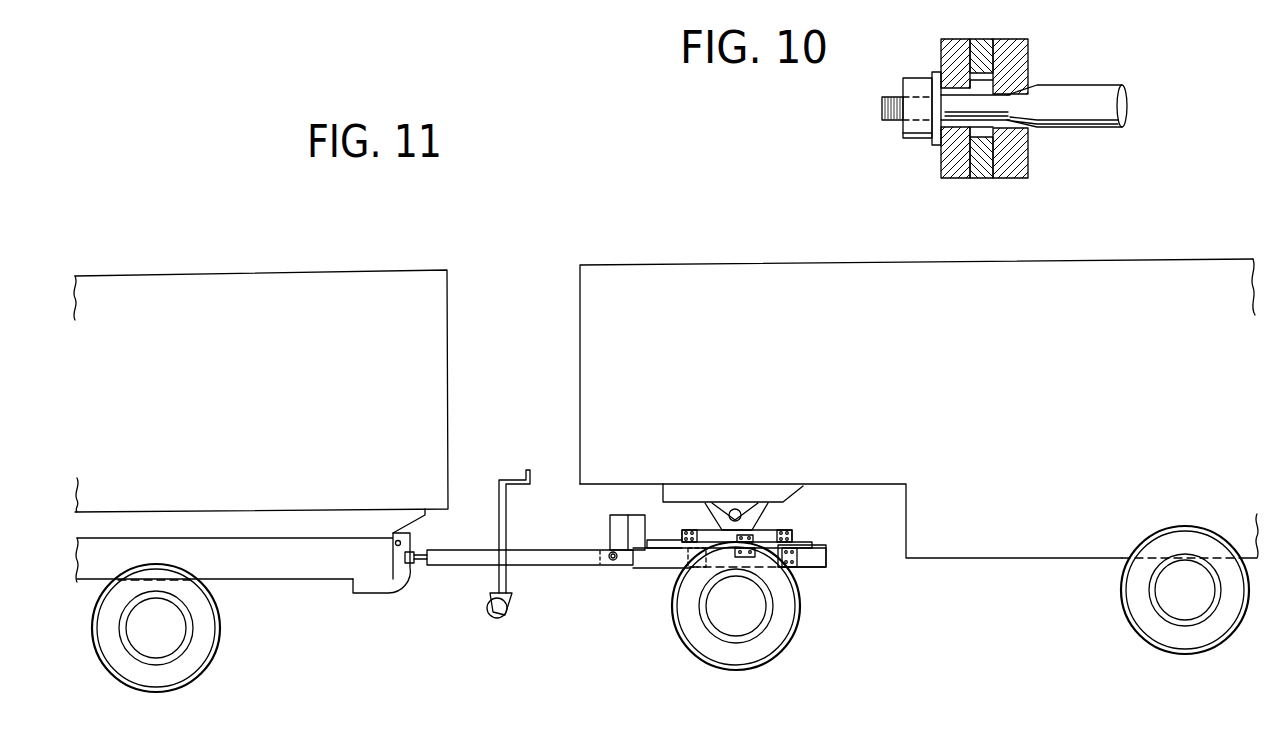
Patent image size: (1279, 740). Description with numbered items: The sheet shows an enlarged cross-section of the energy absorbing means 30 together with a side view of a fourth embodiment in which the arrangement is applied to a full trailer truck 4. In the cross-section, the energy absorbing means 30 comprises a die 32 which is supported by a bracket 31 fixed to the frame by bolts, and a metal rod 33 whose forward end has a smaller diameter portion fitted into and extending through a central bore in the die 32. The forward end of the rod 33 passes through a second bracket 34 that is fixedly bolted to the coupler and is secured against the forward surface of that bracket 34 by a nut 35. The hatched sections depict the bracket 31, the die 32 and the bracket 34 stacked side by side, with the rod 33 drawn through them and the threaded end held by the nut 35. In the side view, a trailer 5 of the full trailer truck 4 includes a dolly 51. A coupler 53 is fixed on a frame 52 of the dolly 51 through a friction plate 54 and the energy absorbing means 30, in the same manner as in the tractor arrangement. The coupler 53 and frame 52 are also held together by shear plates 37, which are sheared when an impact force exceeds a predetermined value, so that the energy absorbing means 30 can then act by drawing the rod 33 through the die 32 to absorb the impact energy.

In FIG. 11, the full trailer truck 4 is at (382, 271).
In FIG. 11, the trailer 5 is at (695, 265).
In FIG. 11, the energy absorbing means 30 is at (681, 558).
In FIG. 10, the bracket 31 is at (982, 170).
In FIG. 10, the die 32 is at (1018, 56).
In FIG. 10, the metal rod 33 is at (1090, 90).
In FIG. 10, the bracket 34 is at (950, 158).
In FIG. 10, the nut 35 is at (917, 86).
In FIG. 11, the shear plates 37 is at (740, 554).
In FIG. 11, the dolly 51 is at (834, 563).
In FIG. 11, the frame 52 is at (826, 553).
In FIG. 11, the coupler 53 is at (770, 529).
In FIG. 11, the friction plate 54 is at (804, 535).